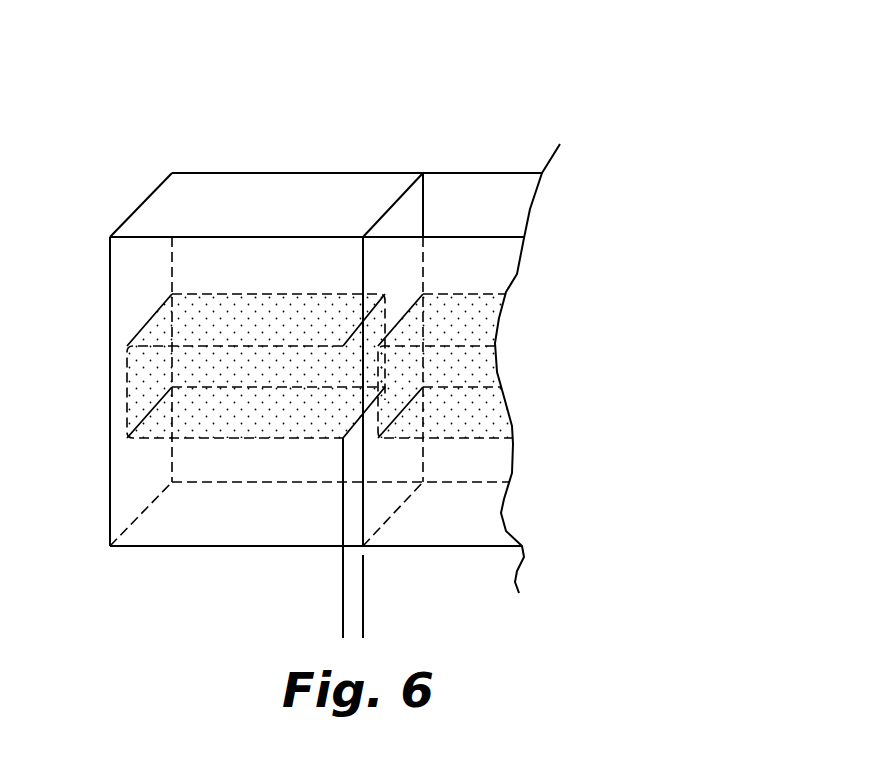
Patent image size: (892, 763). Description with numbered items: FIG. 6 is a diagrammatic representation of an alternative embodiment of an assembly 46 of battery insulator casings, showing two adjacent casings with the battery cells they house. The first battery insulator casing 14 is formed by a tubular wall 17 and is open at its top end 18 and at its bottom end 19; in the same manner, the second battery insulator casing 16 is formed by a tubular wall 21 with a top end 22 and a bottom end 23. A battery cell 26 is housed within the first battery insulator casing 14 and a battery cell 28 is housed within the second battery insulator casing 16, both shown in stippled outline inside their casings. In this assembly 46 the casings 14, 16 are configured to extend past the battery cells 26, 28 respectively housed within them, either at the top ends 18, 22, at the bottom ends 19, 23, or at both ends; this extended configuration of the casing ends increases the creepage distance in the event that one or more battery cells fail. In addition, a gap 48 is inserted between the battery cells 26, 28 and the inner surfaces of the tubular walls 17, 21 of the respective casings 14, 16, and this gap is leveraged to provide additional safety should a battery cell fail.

The assembly of battery insulator casings 46 is at (489, 83).
The first battery insulator casing 14 is at (295, 188).
The second battery insulator casing 16 is at (450, 192).
The top end 22 is at (435, 175).
The top end 18 is at (157, 186).
The tubular wall 17 is at (147, 278).
The bottom end 19 is at (137, 547).
The tubular wall 21 is at (477, 275).
The bottom end 23 is at (423, 548).
The battery cell 26 is at (145, 380).
The battery cell 28 is at (477, 408).
The gap 48 is at (372, 613).